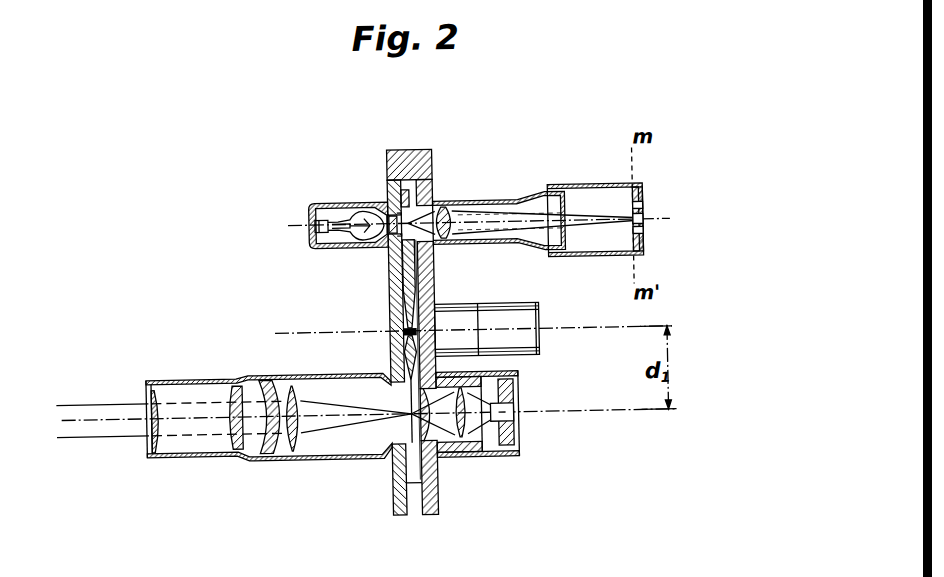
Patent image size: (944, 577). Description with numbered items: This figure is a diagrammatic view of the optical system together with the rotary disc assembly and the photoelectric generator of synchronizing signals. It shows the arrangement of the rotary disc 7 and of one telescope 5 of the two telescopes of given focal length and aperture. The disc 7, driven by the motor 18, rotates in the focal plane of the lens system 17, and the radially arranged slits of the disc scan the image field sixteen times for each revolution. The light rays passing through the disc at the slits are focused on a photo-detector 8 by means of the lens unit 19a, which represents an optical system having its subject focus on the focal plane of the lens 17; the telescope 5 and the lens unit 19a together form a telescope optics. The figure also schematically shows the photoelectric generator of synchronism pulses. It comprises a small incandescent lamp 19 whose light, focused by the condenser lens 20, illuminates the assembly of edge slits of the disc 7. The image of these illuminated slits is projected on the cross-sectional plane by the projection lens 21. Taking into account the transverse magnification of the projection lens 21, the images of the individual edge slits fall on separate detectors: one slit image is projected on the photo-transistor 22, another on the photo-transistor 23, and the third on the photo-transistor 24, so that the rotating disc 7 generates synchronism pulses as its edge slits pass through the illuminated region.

The telescope 5 is at (350, 442).
The rotary disc 7 is at (406, 265).
The photo-detector 8 is at (506, 417).
The lens system 17 is at (265, 391).
The motor 18 is at (523, 320).
The small incandescent lamp 19 is at (322, 204).
The lens unit 19a is at (461, 456).
The condenser lens 20 is at (435, 176).
The projection lens 21 is at (459, 204).
The photo-transistor 22 is at (645, 237).
The photo-transistor 23 is at (645, 220).
The photo-transistor 24 is at (637, 222).